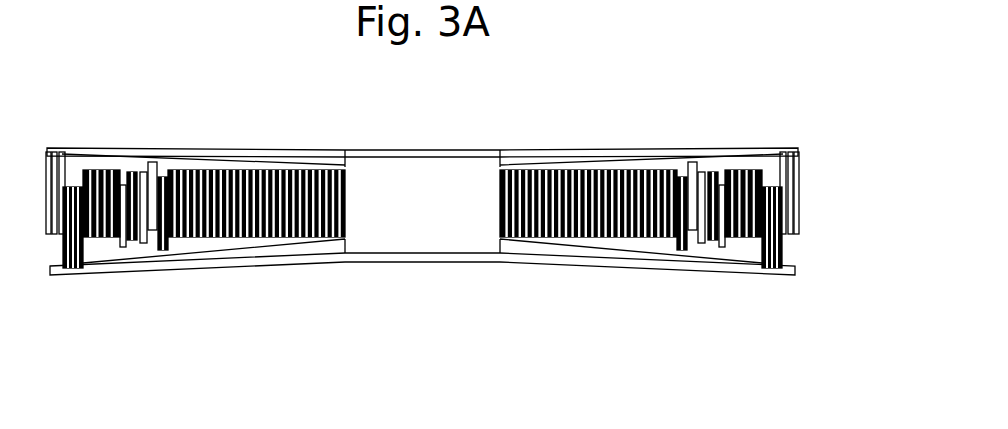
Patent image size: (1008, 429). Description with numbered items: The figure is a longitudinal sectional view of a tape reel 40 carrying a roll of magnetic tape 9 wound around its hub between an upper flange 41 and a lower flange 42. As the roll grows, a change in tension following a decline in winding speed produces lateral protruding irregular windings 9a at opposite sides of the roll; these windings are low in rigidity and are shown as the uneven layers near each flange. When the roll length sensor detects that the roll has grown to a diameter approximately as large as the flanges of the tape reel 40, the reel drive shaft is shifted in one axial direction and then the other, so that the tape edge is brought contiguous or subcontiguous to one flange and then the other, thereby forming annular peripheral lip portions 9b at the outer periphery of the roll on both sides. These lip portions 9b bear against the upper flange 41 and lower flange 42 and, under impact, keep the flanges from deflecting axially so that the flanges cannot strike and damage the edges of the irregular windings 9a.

The magnetic tape 9 is at (810, 214).
The lateral protruding irregular windings 9a is at (163, 155).
The annular peripheral lip portions 9b is at (66, 150).
The tape reel 40 is at (422, 215).
The upper flange 41 is at (232, 152).
The lower flange 42 is at (270, 264).